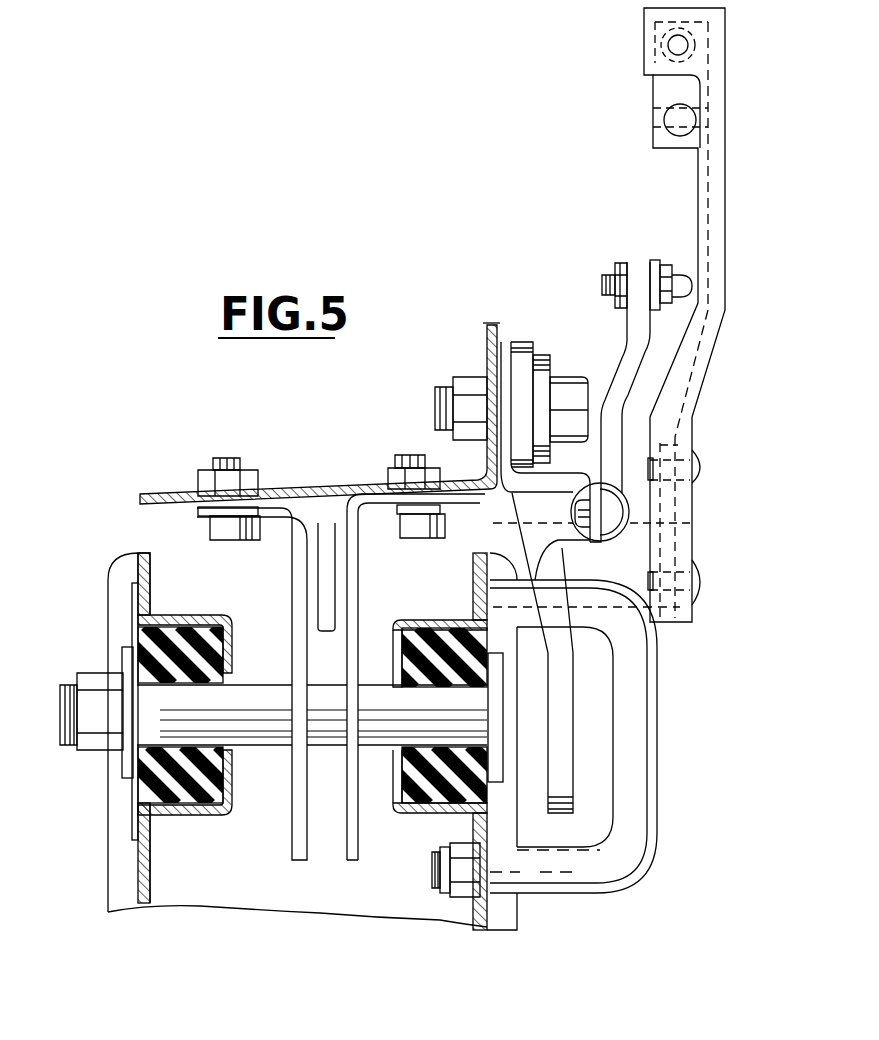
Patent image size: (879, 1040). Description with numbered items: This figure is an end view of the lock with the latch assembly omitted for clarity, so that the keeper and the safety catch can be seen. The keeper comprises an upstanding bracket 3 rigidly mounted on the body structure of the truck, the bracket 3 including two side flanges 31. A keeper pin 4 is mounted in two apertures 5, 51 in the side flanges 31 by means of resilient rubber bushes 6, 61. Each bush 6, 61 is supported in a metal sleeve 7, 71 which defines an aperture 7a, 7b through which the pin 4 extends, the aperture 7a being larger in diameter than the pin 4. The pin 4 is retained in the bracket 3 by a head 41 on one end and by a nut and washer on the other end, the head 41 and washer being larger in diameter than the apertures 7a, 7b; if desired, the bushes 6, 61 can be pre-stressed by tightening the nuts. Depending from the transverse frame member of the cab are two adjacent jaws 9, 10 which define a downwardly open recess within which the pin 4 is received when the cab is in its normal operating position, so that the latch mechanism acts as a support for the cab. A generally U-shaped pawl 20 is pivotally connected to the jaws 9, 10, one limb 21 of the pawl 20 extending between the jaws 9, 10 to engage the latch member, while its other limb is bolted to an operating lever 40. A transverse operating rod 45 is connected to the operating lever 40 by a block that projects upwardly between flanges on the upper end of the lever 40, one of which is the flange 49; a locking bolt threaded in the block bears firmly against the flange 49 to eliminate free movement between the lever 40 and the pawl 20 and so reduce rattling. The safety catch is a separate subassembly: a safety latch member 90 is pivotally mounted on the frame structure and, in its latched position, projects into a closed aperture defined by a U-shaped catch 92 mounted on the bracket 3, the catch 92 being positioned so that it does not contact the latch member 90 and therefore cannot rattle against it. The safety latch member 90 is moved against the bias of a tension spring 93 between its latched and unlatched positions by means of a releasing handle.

The bracket 3 is at (507, 903).
The side flange 31 is at (140, 883).
The keeper pin 4 is at (260, 747).
The head 41 is at (493, 770).
The aperture 5 is at (193, 623).
The aperture 51 is at (450, 813).
The resilient rubber bush 6 is at (213, 787).
The resilient rubber bush 61 is at (427, 790).
The metal sleeve 7 is at (217, 615).
The metal sleeve 71 is at (402, 625).
The aperture 7a is at (227, 653).
The aperture 7b is at (400, 805).
The depending jaw 9 is at (292, 522).
The depending jaw 10 is at (376, 528).
The pawl 20 is at (623, 583).
The limb 21 is at (327, 528).
The operating lever 40 is at (703, 200).
The transverse operating rod 45 is at (663, 118).
The flange 49 is at (650, 42).
The safety latch member 90 is at (613, 440).
The U-shaped catch 92 is at (627, 747).
The tension spring 93 is at (635, 507).